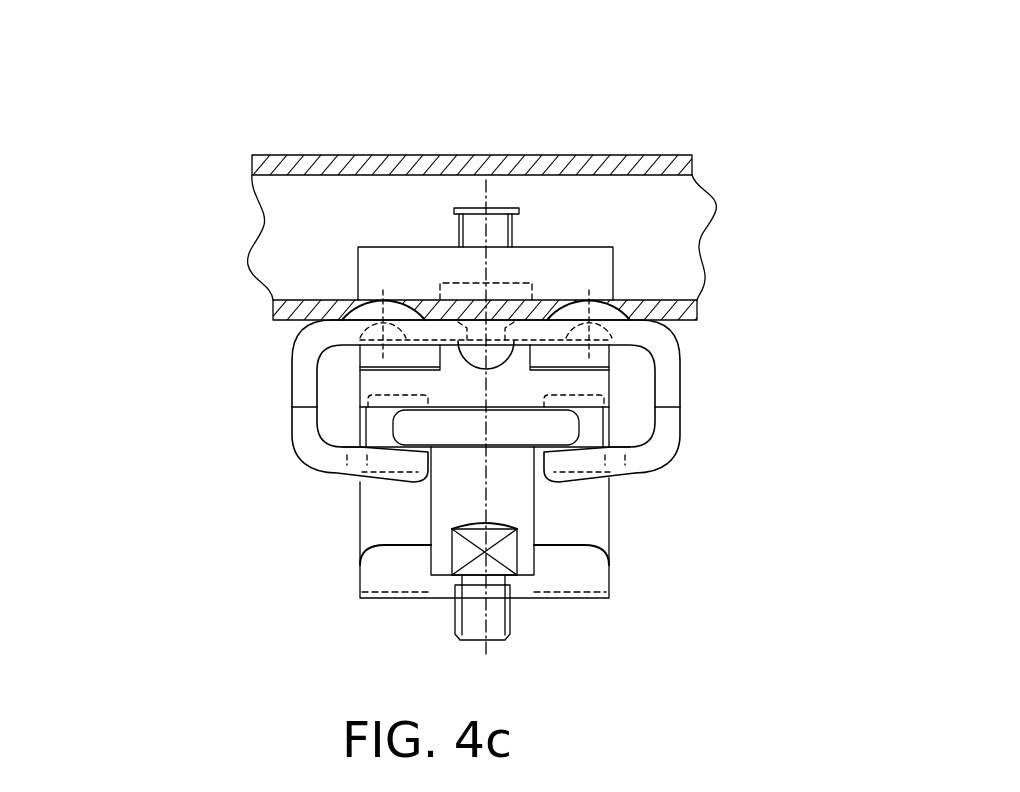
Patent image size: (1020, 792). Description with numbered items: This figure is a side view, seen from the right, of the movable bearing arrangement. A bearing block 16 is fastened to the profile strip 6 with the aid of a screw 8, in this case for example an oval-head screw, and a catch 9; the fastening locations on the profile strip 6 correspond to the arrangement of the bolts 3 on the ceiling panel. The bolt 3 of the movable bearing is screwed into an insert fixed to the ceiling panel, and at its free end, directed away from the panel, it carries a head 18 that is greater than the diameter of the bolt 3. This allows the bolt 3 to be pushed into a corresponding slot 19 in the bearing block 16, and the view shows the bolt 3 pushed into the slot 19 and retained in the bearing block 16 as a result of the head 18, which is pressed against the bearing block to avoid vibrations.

The bolt 3 is at (491, 618).
The profile strip 6 is at (659, 214).
The screw 8 is at (497, 231).
The catch 9 is at (396, 267).
The bearing block 16 is at (298, 375).
The head 18 is at (545, 427).
The slot 19 is at (457, 485).